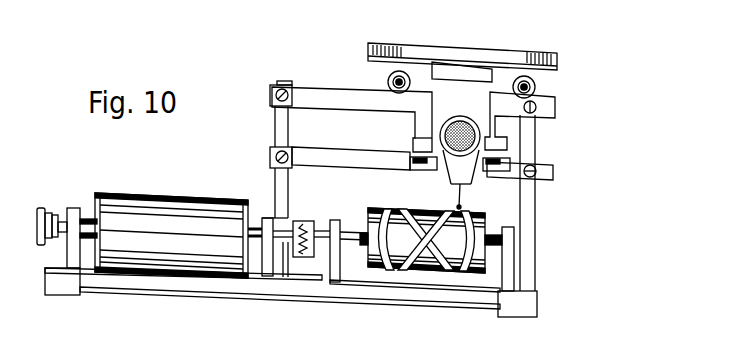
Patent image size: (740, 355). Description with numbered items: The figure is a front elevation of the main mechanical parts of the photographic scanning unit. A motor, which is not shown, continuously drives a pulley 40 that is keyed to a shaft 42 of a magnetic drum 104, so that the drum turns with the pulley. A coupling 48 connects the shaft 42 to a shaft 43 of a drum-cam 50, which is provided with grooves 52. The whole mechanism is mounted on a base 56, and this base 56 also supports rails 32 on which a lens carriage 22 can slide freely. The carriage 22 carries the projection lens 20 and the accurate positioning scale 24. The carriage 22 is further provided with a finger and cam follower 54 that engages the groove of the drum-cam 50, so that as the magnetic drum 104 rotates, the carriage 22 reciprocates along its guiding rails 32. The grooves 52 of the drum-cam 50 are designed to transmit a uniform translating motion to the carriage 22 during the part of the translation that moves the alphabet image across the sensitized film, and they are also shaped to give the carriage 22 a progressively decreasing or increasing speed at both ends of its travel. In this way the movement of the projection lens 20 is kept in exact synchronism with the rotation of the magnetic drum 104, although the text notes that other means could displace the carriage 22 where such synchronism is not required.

The projection lens 20 is at (455, 140).
The lens carriage 22 is at (443, 105).
The accurate positioning scale 24 is at (522, 55).
The rails 32 is at (552, 115).
The pulley 40 is at (45, 207).
The shaft 42 is at (88, 226).
The shaft 43 is at (355, 230).
The coupling 48 is at (307, 223).
The drum-cam 50 is at (452, 251).
The grooves 52 is at (386, 257).
The finger and cam follower 54 is at (461, 192).
The base 56 is at (230, 283).
The magnetic drum 104 is at (190, 222).